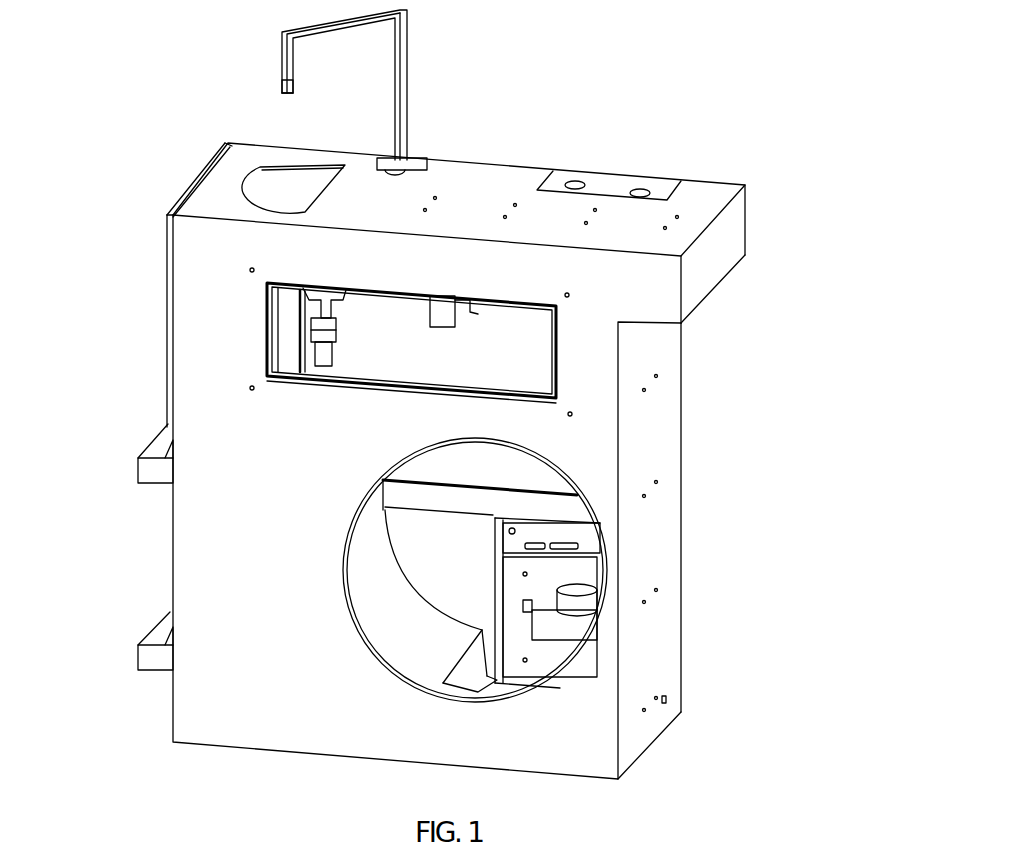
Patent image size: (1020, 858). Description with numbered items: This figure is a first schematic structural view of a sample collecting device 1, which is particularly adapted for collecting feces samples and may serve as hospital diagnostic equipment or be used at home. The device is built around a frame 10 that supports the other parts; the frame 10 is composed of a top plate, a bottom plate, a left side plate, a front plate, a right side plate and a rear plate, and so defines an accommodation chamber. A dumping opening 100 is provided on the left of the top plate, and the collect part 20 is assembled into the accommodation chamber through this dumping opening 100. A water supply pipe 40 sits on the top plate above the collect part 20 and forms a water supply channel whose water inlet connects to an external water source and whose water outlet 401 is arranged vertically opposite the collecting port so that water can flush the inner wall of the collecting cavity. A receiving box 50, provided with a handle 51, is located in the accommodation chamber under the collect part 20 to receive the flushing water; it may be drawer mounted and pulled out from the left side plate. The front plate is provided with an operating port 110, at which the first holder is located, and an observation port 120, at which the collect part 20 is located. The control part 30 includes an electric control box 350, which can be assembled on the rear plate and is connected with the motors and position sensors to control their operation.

The sample collecting device 1 is at (768, 50).
The frame 10 is at (690, 265).
The dumping opening 100 is at (193, 156).
The water supply pipe 40 is at (238, 89).
The water outlet 401 is at (171, 64).
The collect part 20 is at (302, 319).
The observation port 120 is at (222, 328).
The handle 51 is at (110, 539).
The receiving box 50 is at (327, 570).
The operating port 110 is at (262, 620).
The control part 30 is at (603, 585).
The electric control box 350 is at (560, 553).